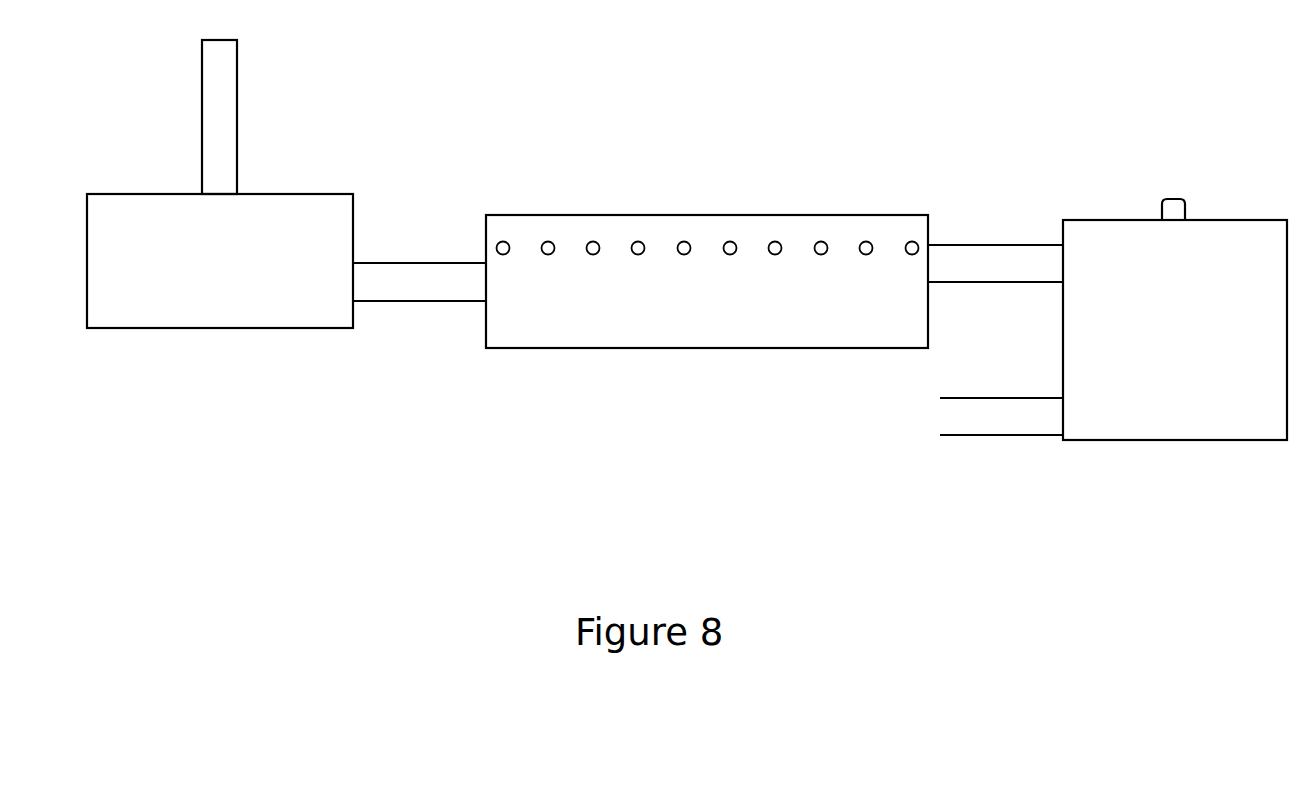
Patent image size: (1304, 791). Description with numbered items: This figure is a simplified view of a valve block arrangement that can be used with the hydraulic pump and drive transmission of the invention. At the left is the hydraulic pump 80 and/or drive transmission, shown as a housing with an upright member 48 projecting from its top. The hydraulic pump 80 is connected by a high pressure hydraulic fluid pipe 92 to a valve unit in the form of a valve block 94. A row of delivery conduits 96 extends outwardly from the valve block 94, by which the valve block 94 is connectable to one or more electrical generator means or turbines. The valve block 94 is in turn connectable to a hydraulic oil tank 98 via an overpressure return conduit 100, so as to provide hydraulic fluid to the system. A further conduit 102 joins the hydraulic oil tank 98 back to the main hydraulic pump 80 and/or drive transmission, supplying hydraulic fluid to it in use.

The rod / shaft 48 is at (230, 140).
The hydraulic pump 80 is at (308, 263).
The high pressure hydraulic fluid pipe 92 is at (415, 280).
The valve block 94 is at (565, 335).
The delivery conduits 96 is at (507, 245).
The hydraulic oil tank 98 is at (1188, 270).
The overpressure return conduit 100 is at (995, 263).
The conduit 102 is at (967, 423).